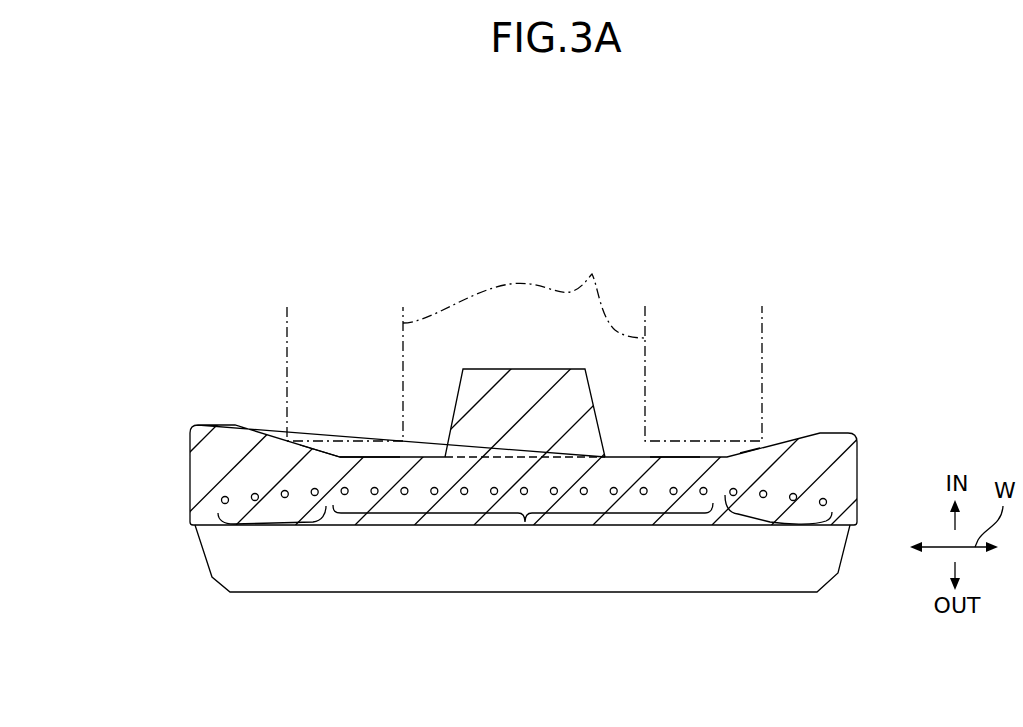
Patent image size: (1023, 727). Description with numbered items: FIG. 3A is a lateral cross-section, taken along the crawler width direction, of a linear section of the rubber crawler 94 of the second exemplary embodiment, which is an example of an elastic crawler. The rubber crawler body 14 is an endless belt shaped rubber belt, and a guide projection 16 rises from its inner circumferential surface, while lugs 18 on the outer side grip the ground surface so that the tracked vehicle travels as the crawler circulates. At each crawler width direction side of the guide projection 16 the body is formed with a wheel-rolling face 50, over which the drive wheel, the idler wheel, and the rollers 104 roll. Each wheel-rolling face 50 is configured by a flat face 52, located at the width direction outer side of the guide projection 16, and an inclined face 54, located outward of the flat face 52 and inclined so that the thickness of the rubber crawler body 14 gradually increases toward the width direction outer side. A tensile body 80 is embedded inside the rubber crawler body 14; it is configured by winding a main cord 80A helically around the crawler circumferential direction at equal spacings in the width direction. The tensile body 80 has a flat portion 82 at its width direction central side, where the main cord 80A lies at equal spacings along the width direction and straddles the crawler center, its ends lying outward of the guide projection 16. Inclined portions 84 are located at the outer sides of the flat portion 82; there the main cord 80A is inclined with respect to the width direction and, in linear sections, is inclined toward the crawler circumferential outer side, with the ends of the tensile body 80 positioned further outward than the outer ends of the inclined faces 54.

The rubber crawler 94 is at (197, 338).
The rubber crawler body 14 is at (190, 488).
The guide projection 16 is at (540, 368).
The lug 18 is at (291, 594).
The wheel-rolling face 50 is at (303, 378).
The flat face 52 is at (380, 454).
The inclined face 54 is at (327, 448).
The tensile body 80 is at (835, 488).
The main cord 80A is at (653, 493).
The flat portion 82 is at (525, 522).
The inclined portion 84 is at (265, 526).
The roller 104 is at (524, 294).